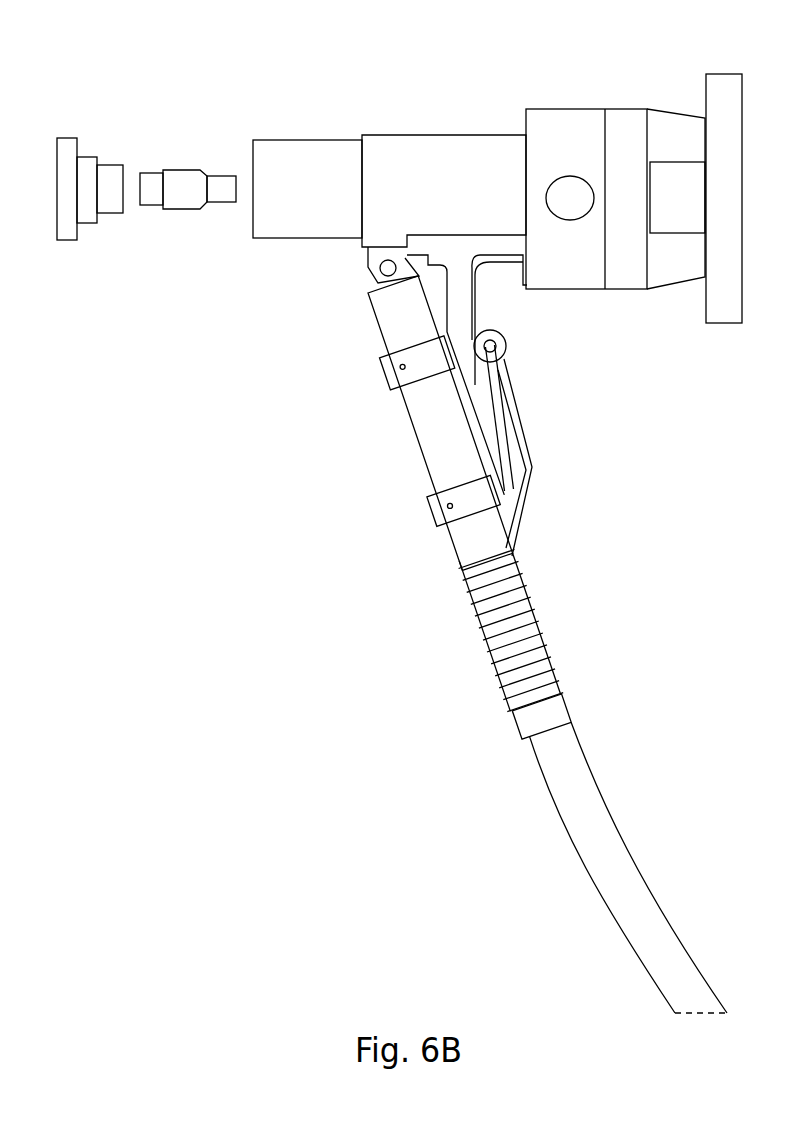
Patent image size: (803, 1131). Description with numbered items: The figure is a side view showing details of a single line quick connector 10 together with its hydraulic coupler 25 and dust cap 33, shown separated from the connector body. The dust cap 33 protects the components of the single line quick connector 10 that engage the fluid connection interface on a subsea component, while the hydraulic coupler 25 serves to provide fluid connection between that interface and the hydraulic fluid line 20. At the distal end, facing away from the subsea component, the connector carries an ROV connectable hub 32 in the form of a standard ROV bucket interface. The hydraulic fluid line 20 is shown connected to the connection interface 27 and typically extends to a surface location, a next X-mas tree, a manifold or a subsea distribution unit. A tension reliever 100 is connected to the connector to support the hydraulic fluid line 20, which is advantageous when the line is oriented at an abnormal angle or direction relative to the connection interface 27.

The single line quick connector 10 is at (443, 95).
The hydraulic fluid line 20 is at (612, 827).
The hydraulic coupler 25 is at (187, 178).
The connection interface 27 is at (368, 262).
The ROV connectable hub 32 is at (723, 85).
The dust cap 33 is at (68, 138).
The tension reliever 100 is at (513, 390).